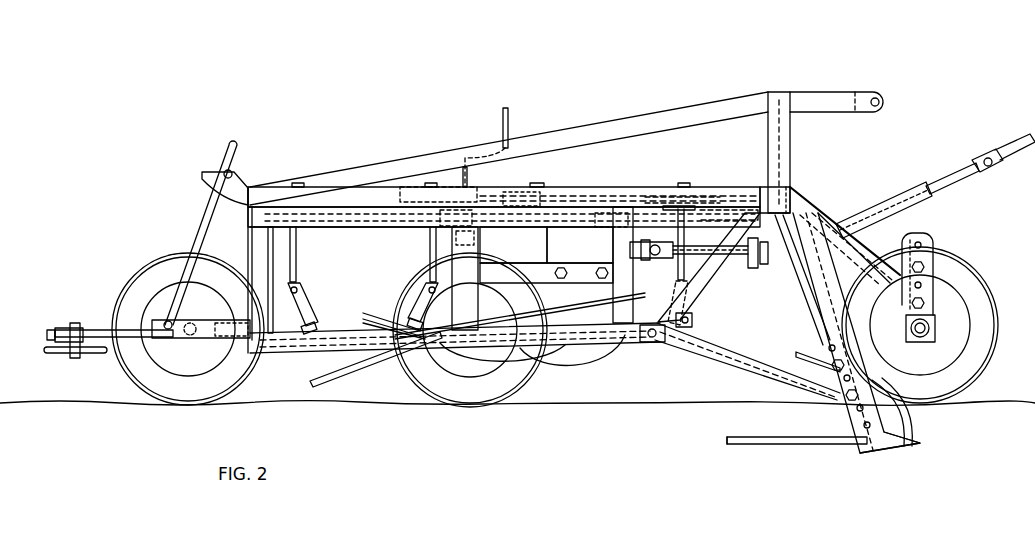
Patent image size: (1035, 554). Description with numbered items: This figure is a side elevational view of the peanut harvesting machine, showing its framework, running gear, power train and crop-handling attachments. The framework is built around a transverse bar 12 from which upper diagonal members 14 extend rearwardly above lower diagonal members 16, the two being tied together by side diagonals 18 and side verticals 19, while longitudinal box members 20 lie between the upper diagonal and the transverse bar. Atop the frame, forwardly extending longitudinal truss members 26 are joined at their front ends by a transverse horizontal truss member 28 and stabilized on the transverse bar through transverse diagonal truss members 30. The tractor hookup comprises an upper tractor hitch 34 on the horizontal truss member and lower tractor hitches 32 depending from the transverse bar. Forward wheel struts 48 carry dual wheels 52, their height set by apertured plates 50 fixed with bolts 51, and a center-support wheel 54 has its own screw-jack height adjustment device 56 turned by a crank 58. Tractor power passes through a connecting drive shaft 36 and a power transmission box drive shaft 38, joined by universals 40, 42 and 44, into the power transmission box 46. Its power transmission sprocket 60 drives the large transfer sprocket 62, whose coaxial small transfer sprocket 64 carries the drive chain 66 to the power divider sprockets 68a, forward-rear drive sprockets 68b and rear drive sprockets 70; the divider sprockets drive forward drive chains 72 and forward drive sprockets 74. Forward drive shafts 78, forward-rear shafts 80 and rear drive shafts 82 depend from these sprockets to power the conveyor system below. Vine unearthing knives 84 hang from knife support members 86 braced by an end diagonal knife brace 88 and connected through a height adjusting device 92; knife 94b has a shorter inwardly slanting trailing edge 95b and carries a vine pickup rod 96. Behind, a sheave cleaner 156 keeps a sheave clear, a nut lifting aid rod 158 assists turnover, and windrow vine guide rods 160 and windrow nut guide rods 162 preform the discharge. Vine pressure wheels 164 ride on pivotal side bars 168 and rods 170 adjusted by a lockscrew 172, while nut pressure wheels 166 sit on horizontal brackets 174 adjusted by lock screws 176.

The transverse bar 12 is at (780, 196).
The upper diagonal member 14 is at (618, 187).
The lower diagonal member 16 is at (644, 337).
The side diagonal 18 is at (708, 278).
The side vertical 19 is at (247, 240).
The longitudinal box member 20 is at (378, 228).
The longitudinal truss member 26 is at (610, 124).
The transverse horizontal truss member 28 is at (775, 92).
The transverse diagonal truss member 30 is at (788, 140).
The lower tractor hitch 32 is at (848, 268).
The upper tractor hitch 34 is at (832, 95).
The connecting drive shaft 36 is at (886, 204).
The power transmission box drive shaft 38 is at (743, 258).
The universal 40 is at (976, 166).
The universal 42 is at (786, 270).
The universal 44 is at (655, 258).
The power transmission box 46 is at (596, 254).
The forward wheel strut 48 is at (818, 224).
The apertured plate 50 is at (932, 243).
The bolt 51 is at (936, 266).
The dual wheel 52 is at (986, 292).
The center-support wheel 54 is at (508, 372).
The height adjustment device 56 is at (478, 238).
The crank 58 is at (509, 120).
The power transmission sprocket 60 is at (586, 192).
The large transfer sprocket 62 is at (512, 200).
The small transfer sprocket 64 is at (546, 255).
The drive chain 66 is at (352, 228).
The power divider sprocket 68a is at (400, 186).
The forward-rear drive sprocket 68b is at (414, 228).
The rear drive sprocket 70 is at (312, 215).
The forward drive chain 72 is at (648, 197).
The forward drive sprocket 74 is at (718, 205).
The forward drive shaft 78 is at (684, 234).
The forward-rear shaft 80 is at (430, 257).
The rear drive shaft 82 is at (298, 271).
The vine unearthing knife 84 is at (906, 453).
The knife support member 86 is at (848, 316).
The end diagonal knife brace 88 is at (765, 368).
The height adjusting device 92 is at (880, 386).
The knife 94b is at (835, 447).
The trailing edge 95b is at (727, 440).
The vine pickup rod 96 is at (910, 424).
The sheave cleaner 156 is at (597, 350).
The nut lifting aid rod 158 is at (548, 352).
The windrow vine guide rod 160 is at (345, 364).
The windrow nut guide rod 162 is at (285, 346).
The vine pressure wheel 164 is at (132, 295).
The nut pressure wheel 166 is at (55, 353).
The pivotal side bar 168 is at (203, 338).
The rod 170 is at (205, 212).
The lockscrew 172 is at (215, 170).
The horizontal bracket 174 is at (122, 338).
The lock screw 176 is at (50, 326).